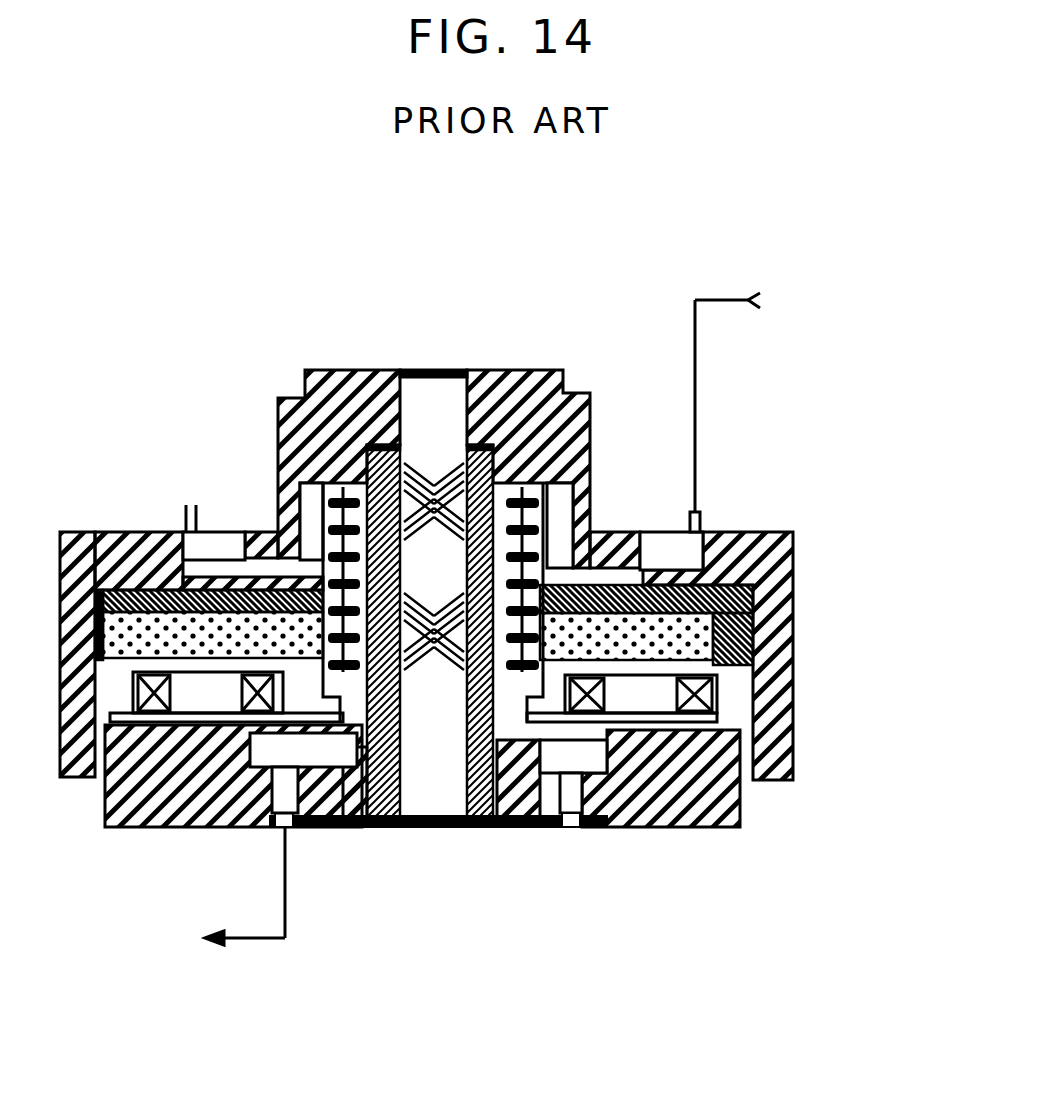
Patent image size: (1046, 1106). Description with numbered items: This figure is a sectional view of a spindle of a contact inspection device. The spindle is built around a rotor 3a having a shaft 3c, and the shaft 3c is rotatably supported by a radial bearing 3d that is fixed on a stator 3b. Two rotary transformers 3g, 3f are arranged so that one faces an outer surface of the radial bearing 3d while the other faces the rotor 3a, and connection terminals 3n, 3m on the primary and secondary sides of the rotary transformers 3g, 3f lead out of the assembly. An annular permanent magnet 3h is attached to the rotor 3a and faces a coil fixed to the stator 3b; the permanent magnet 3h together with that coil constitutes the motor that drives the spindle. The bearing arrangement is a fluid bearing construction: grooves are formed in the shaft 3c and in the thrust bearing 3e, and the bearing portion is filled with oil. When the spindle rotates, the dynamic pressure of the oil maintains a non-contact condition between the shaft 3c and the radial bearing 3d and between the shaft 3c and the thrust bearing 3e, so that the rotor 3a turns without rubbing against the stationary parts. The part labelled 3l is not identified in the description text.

The rotor 3a is at (793, 547).
The stator 3b is at (740, 803).
The shaft 3c is at (440, 412).
The radial bearing 3d is at (592, 443).
The thrust bearing 3e is at (413, 827).
The rotary transformer 3f is at (592, 510).
The rotary transformer 3g is at (505, 750).
The annular permanent magnet 3h is at (750, 627).
The bearing 3l is at (700, 693).
The connection terminal 3m is at (700, 512).
The connection terminal 3n is at (285, 827).